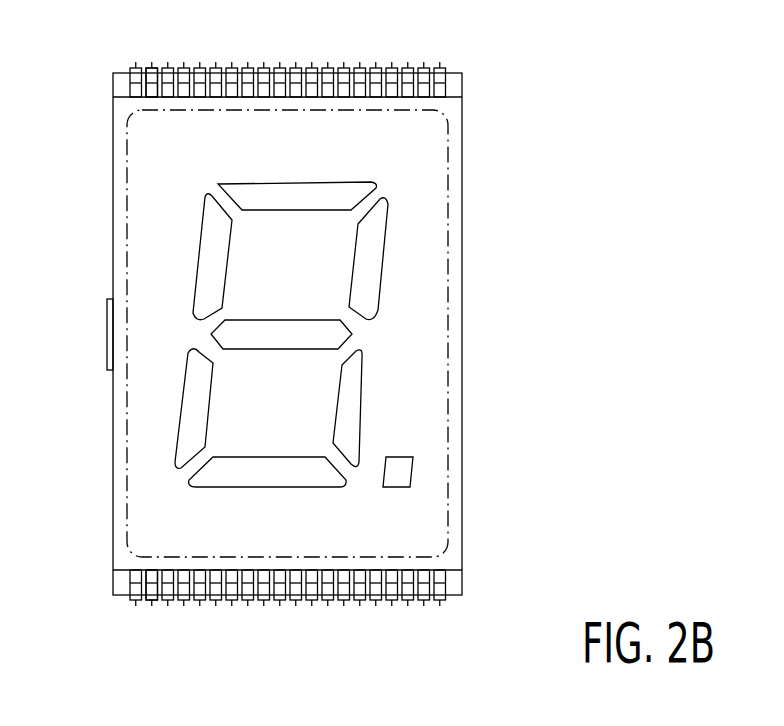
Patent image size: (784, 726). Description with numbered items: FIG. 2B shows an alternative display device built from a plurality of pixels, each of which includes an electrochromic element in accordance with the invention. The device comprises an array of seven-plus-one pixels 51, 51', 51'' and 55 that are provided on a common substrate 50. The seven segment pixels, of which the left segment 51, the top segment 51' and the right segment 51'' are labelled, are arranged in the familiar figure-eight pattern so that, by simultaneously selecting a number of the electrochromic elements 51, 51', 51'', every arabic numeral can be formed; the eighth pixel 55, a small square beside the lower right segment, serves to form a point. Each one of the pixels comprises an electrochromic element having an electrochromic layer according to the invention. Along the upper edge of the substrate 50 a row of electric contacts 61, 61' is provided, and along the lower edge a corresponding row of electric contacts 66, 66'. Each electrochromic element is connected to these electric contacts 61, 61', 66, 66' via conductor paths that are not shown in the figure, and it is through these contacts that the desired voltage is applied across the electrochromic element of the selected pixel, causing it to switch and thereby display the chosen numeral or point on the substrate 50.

The substrate 50 is at (415, 323).
The pixel 51 is at (136, 257).
The pixel 51' is at (280, 173).
The pixel 51'' is at (442, 259).
The point pixel 55 is at (405, 473).
The electric contact 61 is at (279, 52).
The electric contact 61' is at (165, 52).
The electric contact 66 is at (279, 616).
The electric contact 66' is at (166, 616).